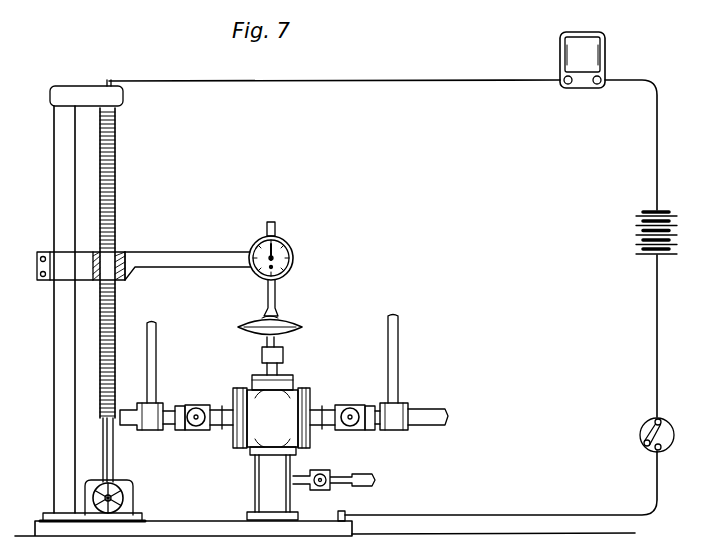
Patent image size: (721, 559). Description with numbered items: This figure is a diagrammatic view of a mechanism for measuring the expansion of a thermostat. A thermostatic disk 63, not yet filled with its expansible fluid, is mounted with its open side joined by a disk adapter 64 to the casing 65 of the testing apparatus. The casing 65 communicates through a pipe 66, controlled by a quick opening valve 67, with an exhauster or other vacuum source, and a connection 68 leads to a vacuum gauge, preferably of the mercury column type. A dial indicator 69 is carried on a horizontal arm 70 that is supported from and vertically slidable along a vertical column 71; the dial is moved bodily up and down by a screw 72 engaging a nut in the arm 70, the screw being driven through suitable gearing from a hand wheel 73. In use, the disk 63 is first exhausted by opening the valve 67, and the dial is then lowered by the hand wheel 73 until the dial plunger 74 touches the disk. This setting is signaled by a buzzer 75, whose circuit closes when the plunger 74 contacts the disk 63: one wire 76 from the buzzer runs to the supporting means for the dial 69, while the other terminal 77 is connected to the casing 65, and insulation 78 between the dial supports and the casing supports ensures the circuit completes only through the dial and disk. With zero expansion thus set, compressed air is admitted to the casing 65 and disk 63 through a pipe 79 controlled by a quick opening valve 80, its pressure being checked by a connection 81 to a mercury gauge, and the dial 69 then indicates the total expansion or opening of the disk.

The thermostatic disk 63 is at (292, 320).
The disk adapter 64 is at (280, 341).
The casing 65 is at (301, 392).
The pipe 66 is at (176, 430).
The quick opening valve 67 is at (197, 410).
The connection to a vacuum gauge 68 is at (156, 376).
The dial indicator 69 is at (294, 256).
The horizontal arm 70 is at (143, 250).
The vertical column 71 is at (58, 302).
The screw 72 is at (103, 323).
The hand wheel 73 is at (95, 498).
The dial plunger 74 is at (277, 310).
The buzzer 75 is at (605, 57).
The wire 76 is at (465, 80).
The terminal 77 is at (348, 518).
The insulation 78 is at (147, 523).
The pipe 79 is at (446, 410).
The quick opening valve 80 is at (357, 430).
The connection to a mercury gauge 81 is at (397, 387).